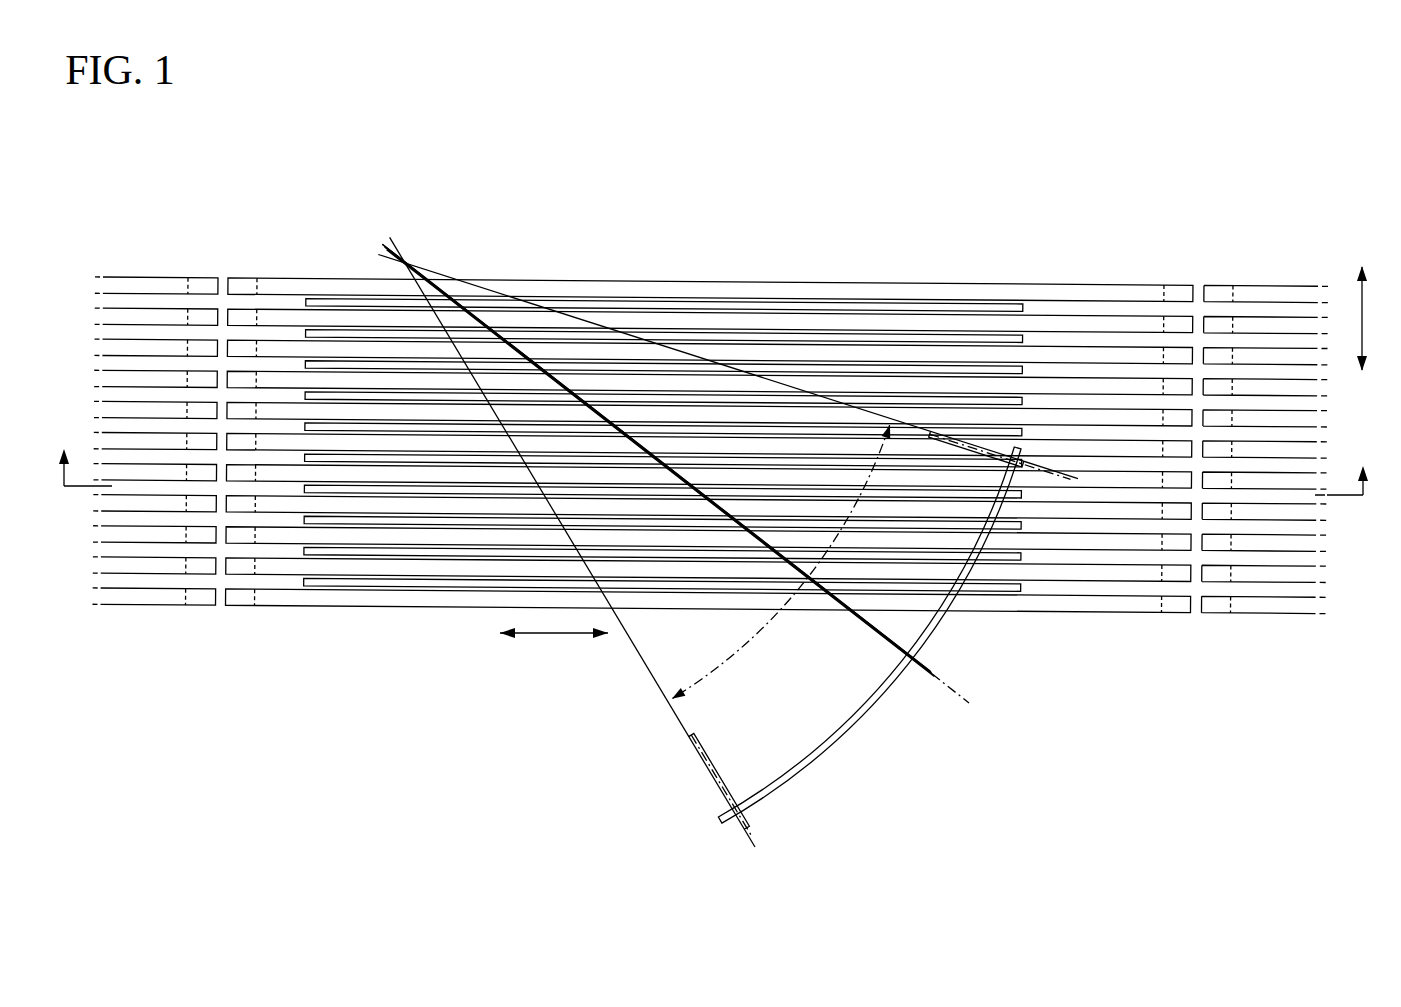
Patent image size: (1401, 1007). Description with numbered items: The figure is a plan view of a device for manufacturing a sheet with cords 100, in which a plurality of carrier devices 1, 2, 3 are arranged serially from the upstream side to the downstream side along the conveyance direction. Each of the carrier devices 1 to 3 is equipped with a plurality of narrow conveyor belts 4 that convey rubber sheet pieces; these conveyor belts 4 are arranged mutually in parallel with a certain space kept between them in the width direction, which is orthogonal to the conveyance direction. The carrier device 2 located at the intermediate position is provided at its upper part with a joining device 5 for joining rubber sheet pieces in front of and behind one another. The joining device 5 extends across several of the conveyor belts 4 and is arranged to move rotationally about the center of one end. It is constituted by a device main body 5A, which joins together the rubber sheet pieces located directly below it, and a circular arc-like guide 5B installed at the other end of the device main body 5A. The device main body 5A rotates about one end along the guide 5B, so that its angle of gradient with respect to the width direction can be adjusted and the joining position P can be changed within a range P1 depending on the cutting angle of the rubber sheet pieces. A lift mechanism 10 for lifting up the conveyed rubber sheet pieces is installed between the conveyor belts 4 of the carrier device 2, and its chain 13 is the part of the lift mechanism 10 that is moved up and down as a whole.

The carrier device 1 is at (1260, 262).
The carrier device 2 is at (920, 262).
The carrier device 3 is at (160, 262).
The narrow conveyor belt 4 is at (348, 352).
The joining device 5 is at (482, 320).
The device main body 5A is at (527, 355).
The circular arc-like guide 5B is at (858, 727).
The lift mechanism 10 is at (717, 449).
The chain 13 is at (1025, 370).
The device for manufacturing a sheet with cords 100 is at (557, 716).
The joining position P is at (606, 414).
The range P1 is at (670, 703).